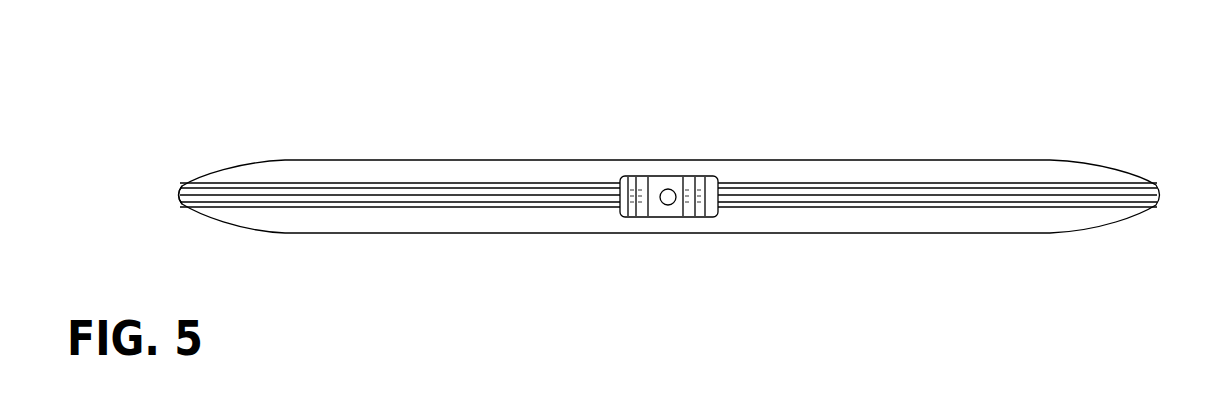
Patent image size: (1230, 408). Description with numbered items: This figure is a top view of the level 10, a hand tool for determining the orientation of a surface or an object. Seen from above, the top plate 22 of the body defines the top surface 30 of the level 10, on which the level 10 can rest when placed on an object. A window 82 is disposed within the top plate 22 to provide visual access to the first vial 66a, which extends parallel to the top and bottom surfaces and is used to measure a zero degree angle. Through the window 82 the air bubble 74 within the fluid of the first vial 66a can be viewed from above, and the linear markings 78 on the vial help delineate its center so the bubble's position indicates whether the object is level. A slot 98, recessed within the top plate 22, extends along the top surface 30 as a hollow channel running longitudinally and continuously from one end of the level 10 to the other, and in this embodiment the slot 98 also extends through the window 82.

The level 10 is at (1153, 103).
The top plate 22 is at (965, 160).
The top surface 30 is at (325, 175).
The slot 98 is at (189, 196).
The first vial 66a is at (676, 217).
The linear markings 78 is at (652, 180).
The air bubble 74 is at (668, 189).
The window 82 is at (712, 178).